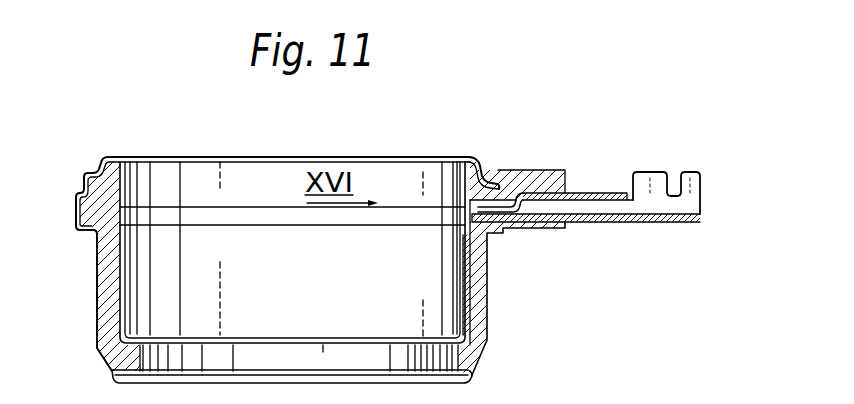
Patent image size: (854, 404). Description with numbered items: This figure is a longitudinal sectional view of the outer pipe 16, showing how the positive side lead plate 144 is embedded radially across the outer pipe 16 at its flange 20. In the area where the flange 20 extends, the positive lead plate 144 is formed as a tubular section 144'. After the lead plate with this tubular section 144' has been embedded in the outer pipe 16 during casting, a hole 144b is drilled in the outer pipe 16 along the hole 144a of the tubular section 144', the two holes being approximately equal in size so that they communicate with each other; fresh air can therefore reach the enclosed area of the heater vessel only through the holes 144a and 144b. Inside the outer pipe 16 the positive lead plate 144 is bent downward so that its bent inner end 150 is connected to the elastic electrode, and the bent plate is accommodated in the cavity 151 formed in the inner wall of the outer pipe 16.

The outer pipe 16 is at (475, 364).
The flange 20 is at (538, 187).
The positive side lead plate 144 is at (586, 235).
The hole of the tubular section 144a is at (620, 208).
The hole 144b is at (467, 210).
The tubular section 144' is at (577, 166).
The bent inner end 150 is at (467, 258).
The cavity 151 is at (462, 282).